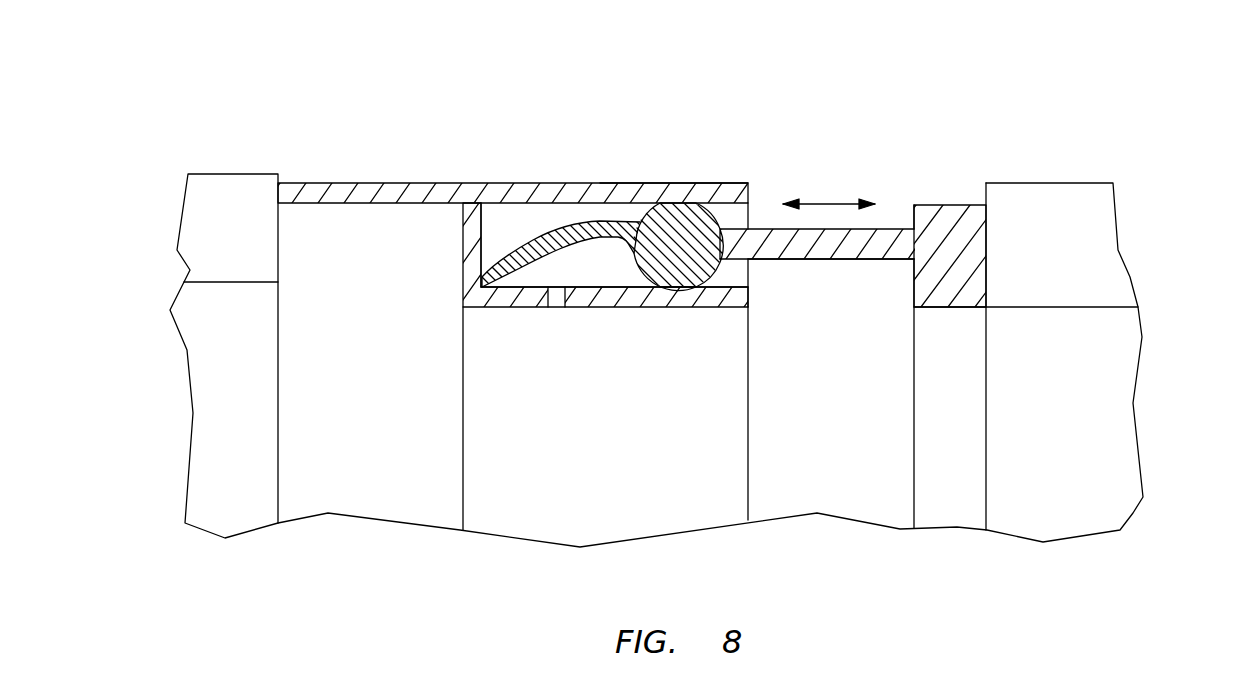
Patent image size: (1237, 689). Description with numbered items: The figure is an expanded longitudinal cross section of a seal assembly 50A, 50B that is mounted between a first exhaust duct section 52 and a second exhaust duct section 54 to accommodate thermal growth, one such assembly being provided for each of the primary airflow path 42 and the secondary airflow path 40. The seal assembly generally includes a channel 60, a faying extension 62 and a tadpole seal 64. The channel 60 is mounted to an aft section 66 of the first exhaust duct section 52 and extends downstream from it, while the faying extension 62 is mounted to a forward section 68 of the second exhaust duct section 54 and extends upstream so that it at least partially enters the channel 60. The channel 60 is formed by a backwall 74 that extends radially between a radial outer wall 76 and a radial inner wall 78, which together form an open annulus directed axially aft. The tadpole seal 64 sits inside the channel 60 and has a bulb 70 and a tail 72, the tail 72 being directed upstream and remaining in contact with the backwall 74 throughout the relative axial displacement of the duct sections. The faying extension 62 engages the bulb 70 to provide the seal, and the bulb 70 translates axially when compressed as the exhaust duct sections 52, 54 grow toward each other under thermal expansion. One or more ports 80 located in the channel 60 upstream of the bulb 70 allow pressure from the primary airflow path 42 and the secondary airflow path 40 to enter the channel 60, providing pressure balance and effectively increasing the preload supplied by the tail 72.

The secondary airflow path 40 is at (606, 452).
The primary airflow path 42 is at (411, 102).
The seal assembly 50A is at (624, 177).
The seal assembly 50B is at (605, 245).
The first exhaust duct section 52 is at (238, 213).
The second exhaust duct section 54 is at (1140, 227).
The channel 60 is at (662, 317).
The faying extension 62 is at (834, 285).
The tadpole seal 64 is at (573, 208).
The aft section 66 is at (342, 183).
The forward section 68 is at (957, 205).
The bulb 70 is at (727, 203).
The tail 72 is at (532, 218).
The backwall 74 is at (463, 262).
The radial outer wall 76 is at (649, 183).
The radial inner wall 78 is at (627, 310).
The port 80 is at (558, 303).